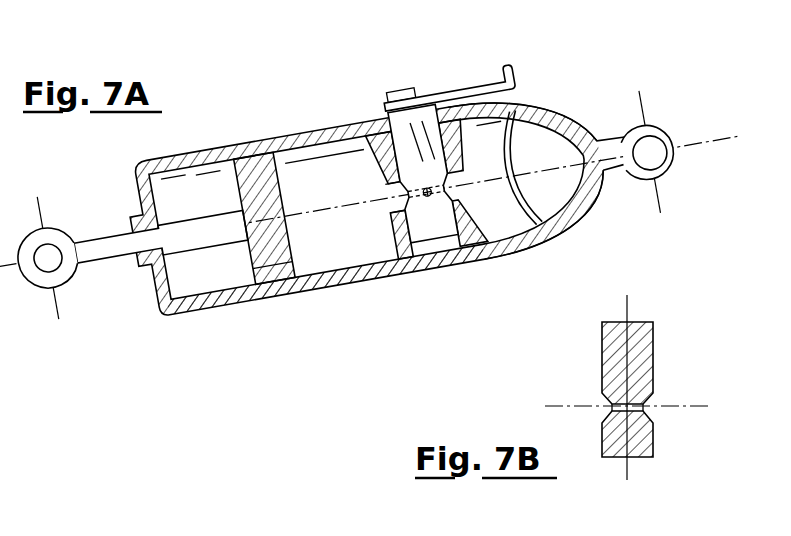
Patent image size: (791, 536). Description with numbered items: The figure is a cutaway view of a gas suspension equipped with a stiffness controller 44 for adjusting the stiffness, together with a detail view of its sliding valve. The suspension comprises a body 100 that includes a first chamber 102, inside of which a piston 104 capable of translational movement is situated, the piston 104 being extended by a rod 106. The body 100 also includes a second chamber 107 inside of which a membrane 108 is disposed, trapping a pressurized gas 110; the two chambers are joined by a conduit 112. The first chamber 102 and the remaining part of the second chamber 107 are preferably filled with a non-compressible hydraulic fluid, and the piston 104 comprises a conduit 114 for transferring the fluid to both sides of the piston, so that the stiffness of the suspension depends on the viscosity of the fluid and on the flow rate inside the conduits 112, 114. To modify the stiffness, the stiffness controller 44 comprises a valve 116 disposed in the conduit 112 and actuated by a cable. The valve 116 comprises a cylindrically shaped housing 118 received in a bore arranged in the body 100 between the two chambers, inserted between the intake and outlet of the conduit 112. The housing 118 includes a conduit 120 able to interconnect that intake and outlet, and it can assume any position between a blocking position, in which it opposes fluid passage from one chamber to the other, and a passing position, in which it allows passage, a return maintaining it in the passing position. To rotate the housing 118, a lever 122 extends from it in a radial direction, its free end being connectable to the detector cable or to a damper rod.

In FIG. 7A, the stiffness controller 44 is at (427, 83).
In FIG. 7A, the body 100 is at (324, 130).
In FIG. 7A, the first chamber 102 is at (337, 264).
In FIG. 7A, the piston 104 is at (250, 282).
In FIG. 7A, the rod 106 is at (110, 243).
In FIG. 7A, the second chamber 107 is at (527, 108).
In FIG. 7A, the membrane 108 is at (470, 260).
In FIG. 7A, the pressurized gas 110 is at (603, 205).
In FIG. 7A, the conduit 112 is at (393, 197).
In FIG. 7A, the conduit 114 is at (262, 157).
In FIG. 7A, the valve 116 is at (368, 120).
In FIG. 7B, the housing 118 is at (610, 350).
In FIG. 7B, the conduit 120 is at (647, 407).
In FIG. 7A, the lever 122 is at (470, 80).